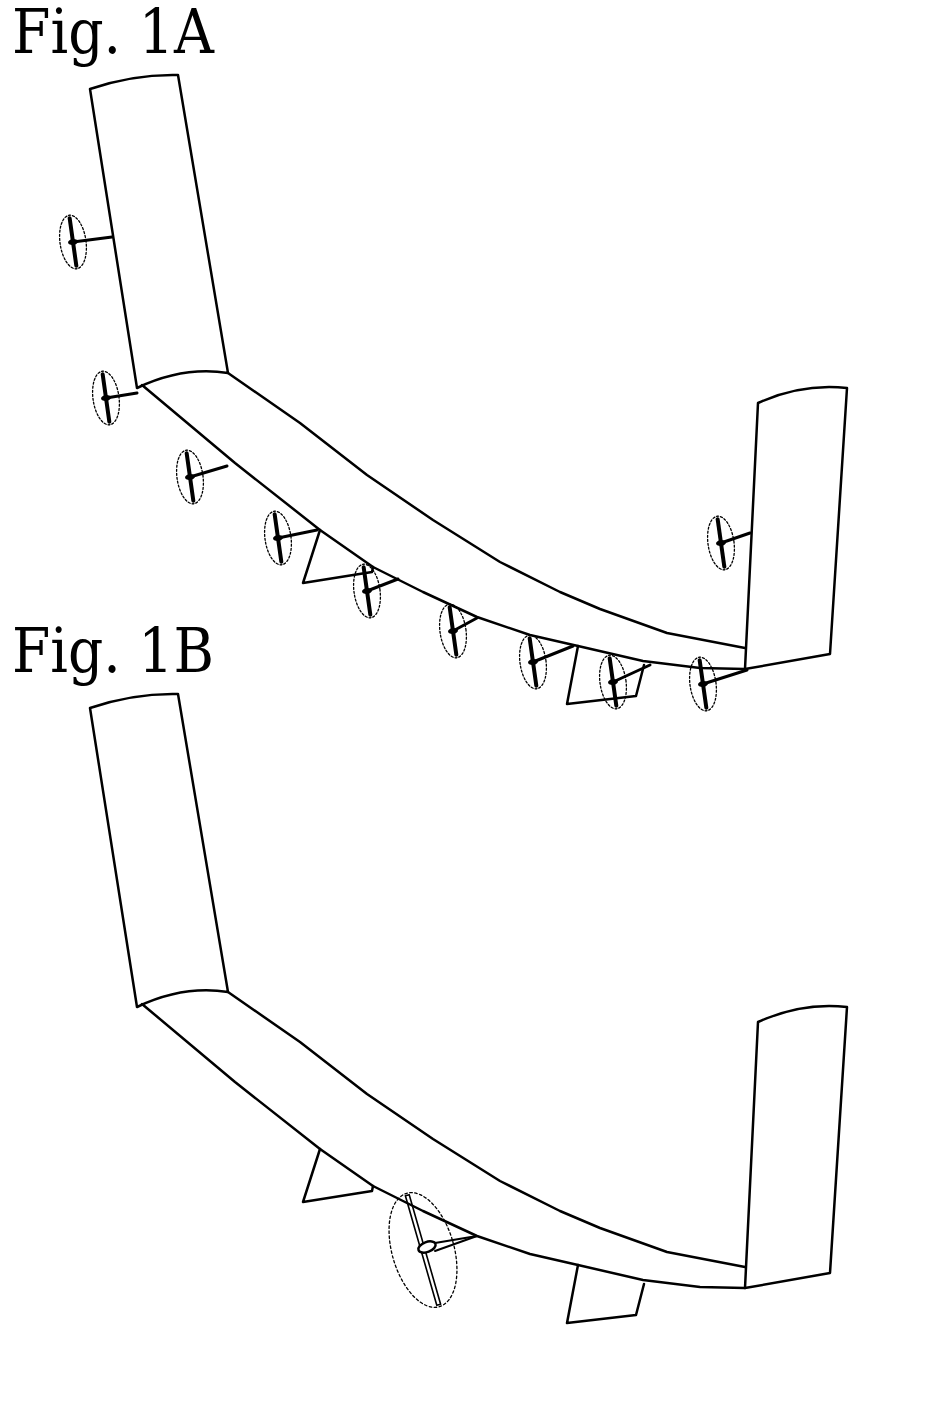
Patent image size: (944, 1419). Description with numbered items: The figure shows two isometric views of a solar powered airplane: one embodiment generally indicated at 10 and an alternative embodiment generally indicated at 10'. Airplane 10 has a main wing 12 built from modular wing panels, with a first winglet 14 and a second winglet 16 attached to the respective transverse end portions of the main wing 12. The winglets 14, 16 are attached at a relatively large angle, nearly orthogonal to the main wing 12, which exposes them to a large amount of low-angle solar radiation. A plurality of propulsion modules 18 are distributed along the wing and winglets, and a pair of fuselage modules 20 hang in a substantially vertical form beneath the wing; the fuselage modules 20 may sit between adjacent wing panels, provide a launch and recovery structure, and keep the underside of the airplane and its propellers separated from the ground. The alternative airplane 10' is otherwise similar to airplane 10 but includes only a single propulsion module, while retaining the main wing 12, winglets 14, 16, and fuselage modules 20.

In FIG. 1A, the solar powered airplane 10 is at (456, 421).
In FIG. 1B, the alternative airplane 10' is at (491, 1040).
In FIG. 1A, the main wing 12 is at (300, 475).
In FIG. 1B, the main wing 12 is at (443, 1140).
In FIG. 1A, the first winglet 14 is at (177, 202).
In FIG. 1B, the first winglet 14 is at (171, 850).
In FIG. 1A, the second winglet 16 is at (817, 493).
In FIG. 1B, the second winglet 16 is at (819, 1147).
In FIG. 1A, the propulsion module 18 is at (66, 290).
In FIG. 1B, the propulsion module 18 is at (397, 1253).
In FIG. 1A, the fuselage module 20 is at (323, 573).
In FIG. 1B, the fuselage module 20 is at (464, 1267).